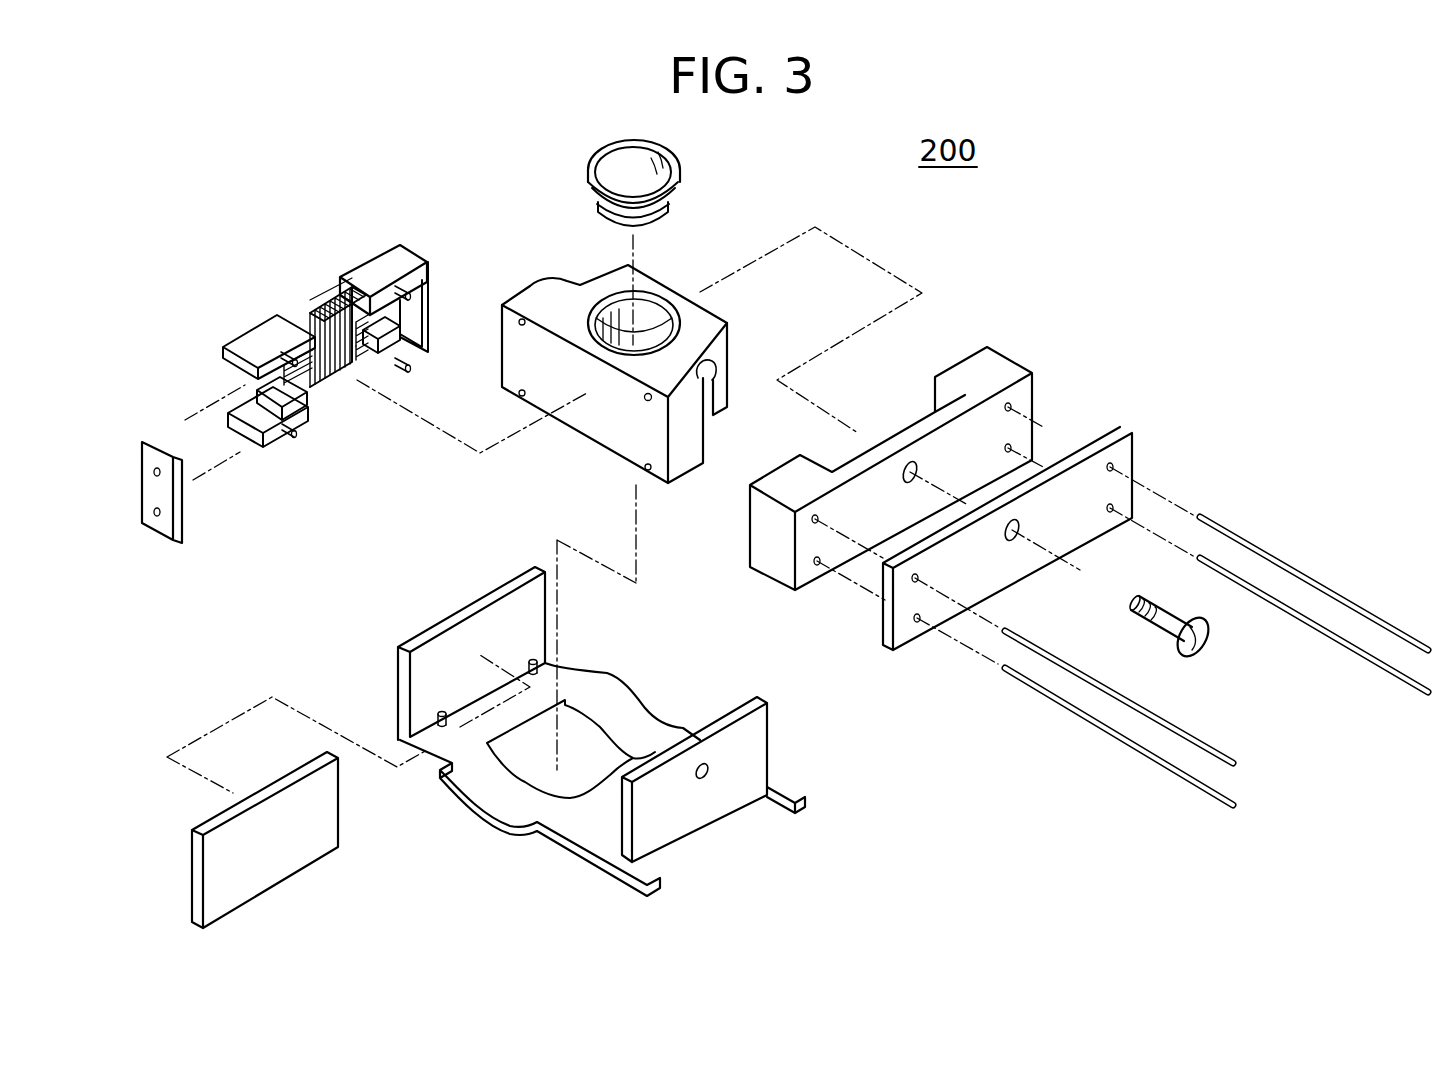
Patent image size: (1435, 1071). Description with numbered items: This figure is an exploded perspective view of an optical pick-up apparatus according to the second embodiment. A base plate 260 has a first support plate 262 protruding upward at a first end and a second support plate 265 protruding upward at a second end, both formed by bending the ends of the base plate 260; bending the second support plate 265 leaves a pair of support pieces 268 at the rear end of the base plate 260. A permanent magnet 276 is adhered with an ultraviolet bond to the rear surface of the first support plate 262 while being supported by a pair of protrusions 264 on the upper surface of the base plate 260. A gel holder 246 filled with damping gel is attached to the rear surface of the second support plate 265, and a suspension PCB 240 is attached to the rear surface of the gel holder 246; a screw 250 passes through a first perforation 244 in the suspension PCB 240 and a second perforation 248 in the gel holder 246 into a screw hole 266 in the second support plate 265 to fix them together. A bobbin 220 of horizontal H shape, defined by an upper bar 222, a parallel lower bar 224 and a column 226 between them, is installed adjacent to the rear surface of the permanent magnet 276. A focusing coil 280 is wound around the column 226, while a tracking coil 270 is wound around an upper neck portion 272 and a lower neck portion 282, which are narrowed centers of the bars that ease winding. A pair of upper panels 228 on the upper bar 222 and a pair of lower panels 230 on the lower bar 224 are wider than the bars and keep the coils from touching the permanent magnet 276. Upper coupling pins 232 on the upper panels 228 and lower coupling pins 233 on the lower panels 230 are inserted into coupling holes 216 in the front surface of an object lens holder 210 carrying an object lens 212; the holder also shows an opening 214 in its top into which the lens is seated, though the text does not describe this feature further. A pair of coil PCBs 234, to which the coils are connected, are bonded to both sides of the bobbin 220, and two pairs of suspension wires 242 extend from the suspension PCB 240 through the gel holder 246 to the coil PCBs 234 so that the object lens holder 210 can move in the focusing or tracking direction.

The object lens holder 210 is at (636, 349).
The object lens 212 is at (677, 157).
The lens bore 214 is at (653, 310).
The coupling holes 216 is at (647, 400).
The bobbin 220 is at (343, 348).
The upper bar 222 is at (337, 297).
The lower bar 224 is at (383, 330).
The column 226 is at (378, 340).
The upper panels 228 is at (377, 267).
The lower panels 230 is at (257, 430).
The upper coupling pins 232 is at (272, 328).
The lower coupling pins 233 is at (294, 436).
The coil PCBs 234 is at (165, 527).
The suspension PCB 240 is at (1049, 482).
The suspension wires 242 is at (1328, 627).
The first perforation 244 is at (1014, 524).
The gel holder 246 is at (913, 417).
The second perforation 248 is at (912, 462).
The screw 250 is at (1212, 630).
The base plate 260 is at (589, 731).
The first support plate 262 is at (440, 620).
The protrusions 264 is at (440, 713).
The second support plate 265 is at (663, 817).
The screw hole 266 is at (703, 773).
The support pieces 268 is at (800, 790).
The tracking coil 270 is at (317, 363).
The upper neck portion 272 is at (310, 300).
The permanent magnet 276 is at (297, 828).
The focusing coil 280 is at (350, 367).
The lower neck portion 282 is at (343, 383).